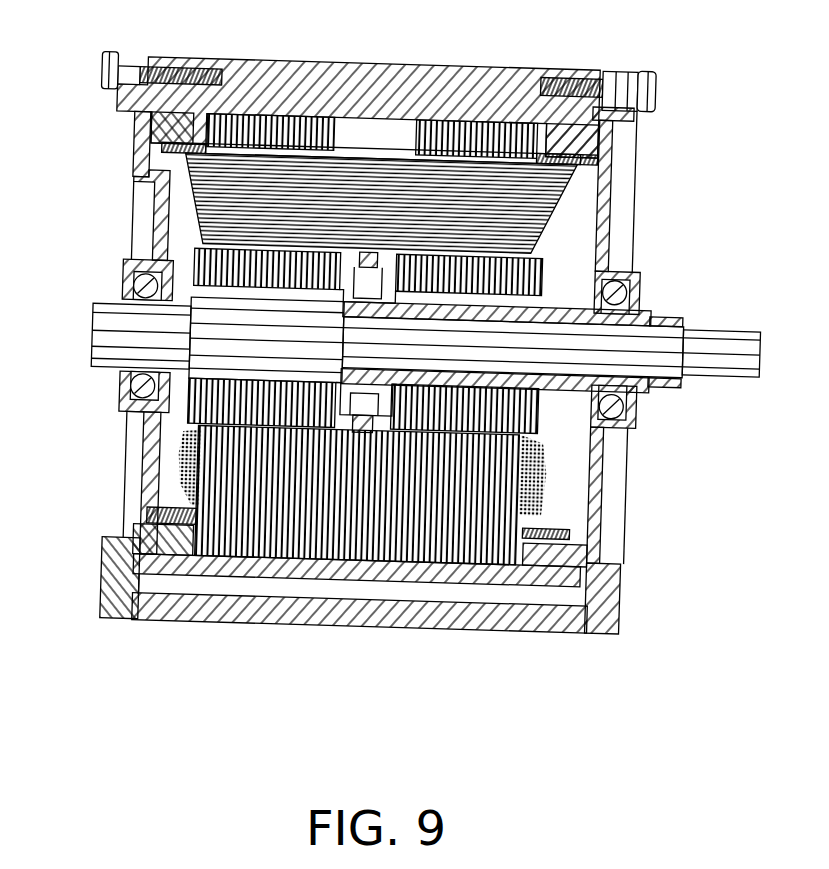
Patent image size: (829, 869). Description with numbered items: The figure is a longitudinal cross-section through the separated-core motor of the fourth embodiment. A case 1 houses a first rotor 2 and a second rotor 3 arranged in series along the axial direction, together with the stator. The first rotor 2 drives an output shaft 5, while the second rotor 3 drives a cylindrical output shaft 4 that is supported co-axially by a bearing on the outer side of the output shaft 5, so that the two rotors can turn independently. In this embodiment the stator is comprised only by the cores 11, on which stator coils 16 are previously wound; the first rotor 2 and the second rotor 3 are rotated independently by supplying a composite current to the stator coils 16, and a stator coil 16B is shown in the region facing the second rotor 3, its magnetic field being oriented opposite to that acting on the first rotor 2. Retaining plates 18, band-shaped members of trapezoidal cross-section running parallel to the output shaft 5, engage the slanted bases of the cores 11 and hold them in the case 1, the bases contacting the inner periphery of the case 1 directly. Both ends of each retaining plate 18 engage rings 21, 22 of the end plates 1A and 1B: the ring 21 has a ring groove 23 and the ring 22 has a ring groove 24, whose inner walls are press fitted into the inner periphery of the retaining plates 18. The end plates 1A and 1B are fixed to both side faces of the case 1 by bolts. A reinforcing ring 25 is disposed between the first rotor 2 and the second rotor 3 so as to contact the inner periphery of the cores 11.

The case 1 is at (345, 75).
The end plate 1A is at (607, 222).
The end plate 1B is at (147, 438).
The first rotor 2 is at (190, 258).
The second rotor 3 is at (542, 432).
The output shaft 4 is at (667, 307).
The output shaft 5 is at (720, 340).
The core 11 is at (247, 555).
The stator coil 16 is at (275, 157).
The stator coil 16B is at (504, 157).
The retaining plate 18 is at (243, 152).
The ring 21 is at (592, 132).
The ring 22 is at (160, 124).
The ring groove 23 is at (556, 153).
The ring groove 24 is at (186, 146).
The reinforcing ring 25 is at (365, 262).